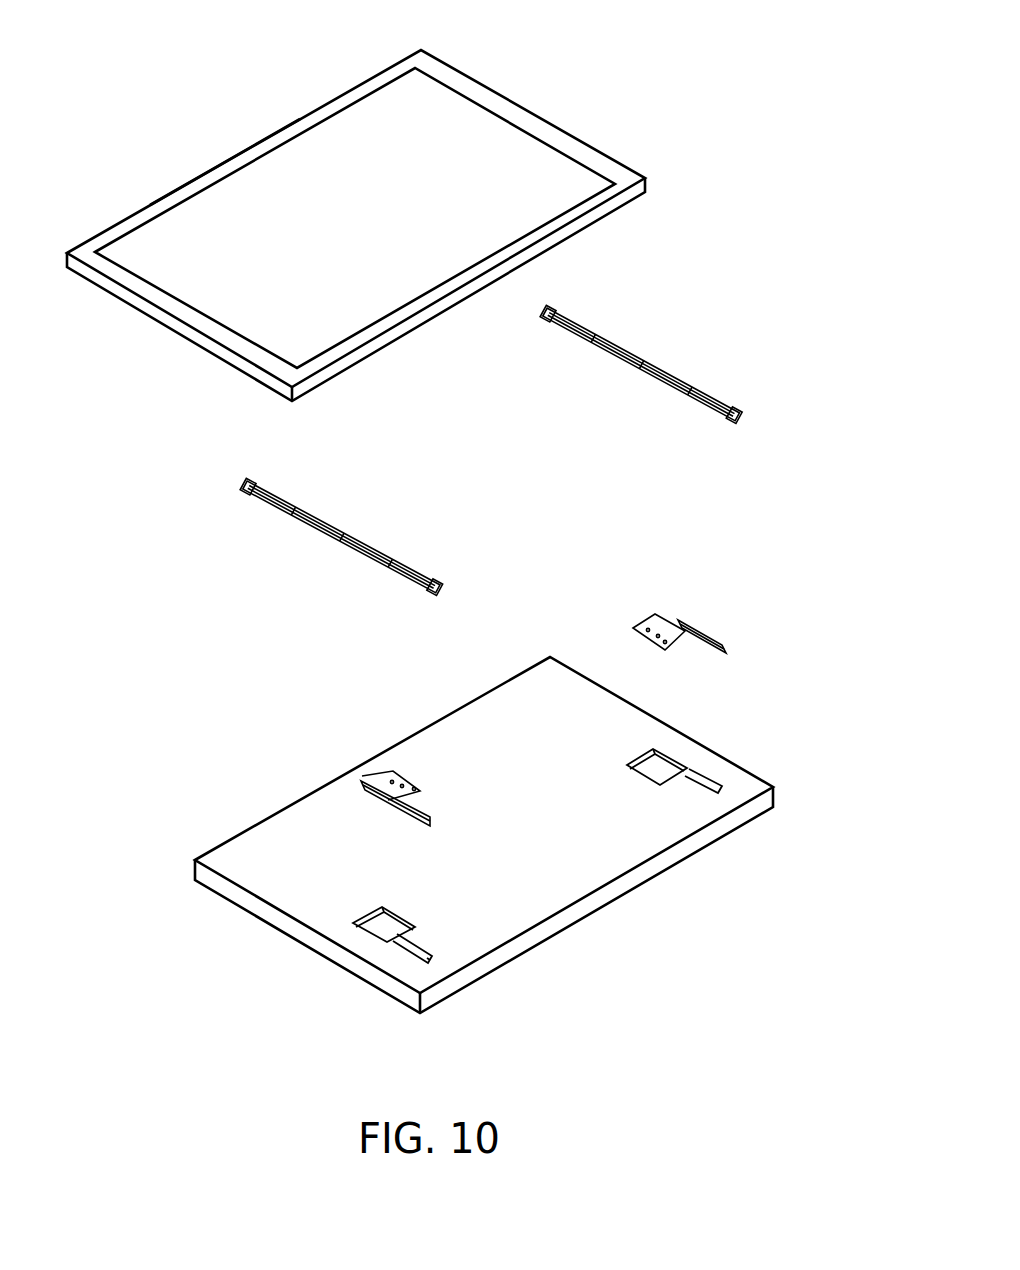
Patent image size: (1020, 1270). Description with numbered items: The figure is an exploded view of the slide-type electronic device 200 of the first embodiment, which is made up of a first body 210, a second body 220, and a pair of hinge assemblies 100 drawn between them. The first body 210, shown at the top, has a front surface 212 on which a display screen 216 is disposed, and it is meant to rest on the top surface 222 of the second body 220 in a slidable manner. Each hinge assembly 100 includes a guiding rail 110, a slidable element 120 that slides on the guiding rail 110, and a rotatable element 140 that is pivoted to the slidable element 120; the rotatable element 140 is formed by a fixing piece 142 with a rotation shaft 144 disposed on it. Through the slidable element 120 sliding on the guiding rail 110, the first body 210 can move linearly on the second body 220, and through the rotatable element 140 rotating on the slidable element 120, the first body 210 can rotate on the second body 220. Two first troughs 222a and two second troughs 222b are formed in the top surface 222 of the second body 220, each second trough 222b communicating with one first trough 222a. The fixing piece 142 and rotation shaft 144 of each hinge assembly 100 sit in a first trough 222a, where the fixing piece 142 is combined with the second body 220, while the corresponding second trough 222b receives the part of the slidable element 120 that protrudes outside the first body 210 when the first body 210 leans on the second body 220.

The hinge assembly 100 is at (708, 347).
The guiding rail 110 is at (655, 380).
The slidable element 120 is at (407, 815).
The rotatable element 140 is at (430, 797).
The fixing piece 142 is at (407, 783).
The rotation shaft 144 is at (380, 773).
The slide-type electronic device 200 is at (100, 325).
The first body 210 is at (590, 143).
The front surface 212 is at (247, 154).
The display screen 216 is at (435, 132).
The second body 220 is at (313, 946).
The top surface 222 is at (537, 676).
The first trough 222a is at (387, 930).
The second trough 222b is at (417, 963).